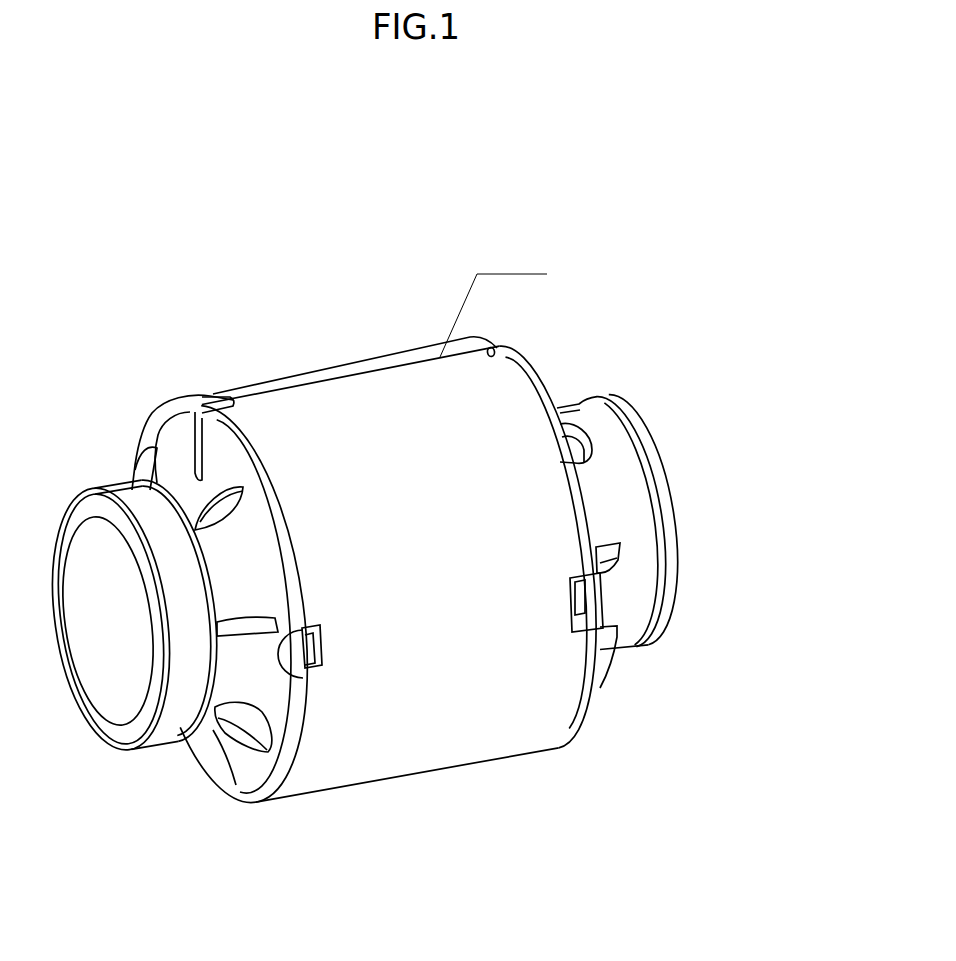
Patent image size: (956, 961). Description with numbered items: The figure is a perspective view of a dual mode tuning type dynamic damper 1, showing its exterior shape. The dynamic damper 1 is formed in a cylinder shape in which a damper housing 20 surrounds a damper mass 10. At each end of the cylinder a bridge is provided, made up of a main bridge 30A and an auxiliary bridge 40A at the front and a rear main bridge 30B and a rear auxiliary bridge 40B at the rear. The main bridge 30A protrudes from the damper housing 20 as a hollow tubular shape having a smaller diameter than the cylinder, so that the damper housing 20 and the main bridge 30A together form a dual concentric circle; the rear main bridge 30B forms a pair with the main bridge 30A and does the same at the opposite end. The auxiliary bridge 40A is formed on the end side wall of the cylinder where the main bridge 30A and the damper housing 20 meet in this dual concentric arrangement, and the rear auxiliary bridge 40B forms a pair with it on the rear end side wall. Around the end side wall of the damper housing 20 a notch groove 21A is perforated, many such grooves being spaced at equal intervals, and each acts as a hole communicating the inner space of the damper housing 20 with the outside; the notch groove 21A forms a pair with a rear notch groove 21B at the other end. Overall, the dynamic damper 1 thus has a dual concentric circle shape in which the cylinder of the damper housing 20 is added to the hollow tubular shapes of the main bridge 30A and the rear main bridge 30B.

The dynamic damper 1 is at (398, 284).
The damper mass 10 is at (312, 650).
The damper housing 20 is at (301, 418).
The notch groove 21A is at (205, 407).
The rear notch groove 21B is at (583, 622).
The main bridge 30A is at (143, 517).
The rear main bridge 30B is at (625, 492).
The auxiliary bridge 40A is at (252, 727).
The rear auxiliary bridge 40B is at (620, 562).